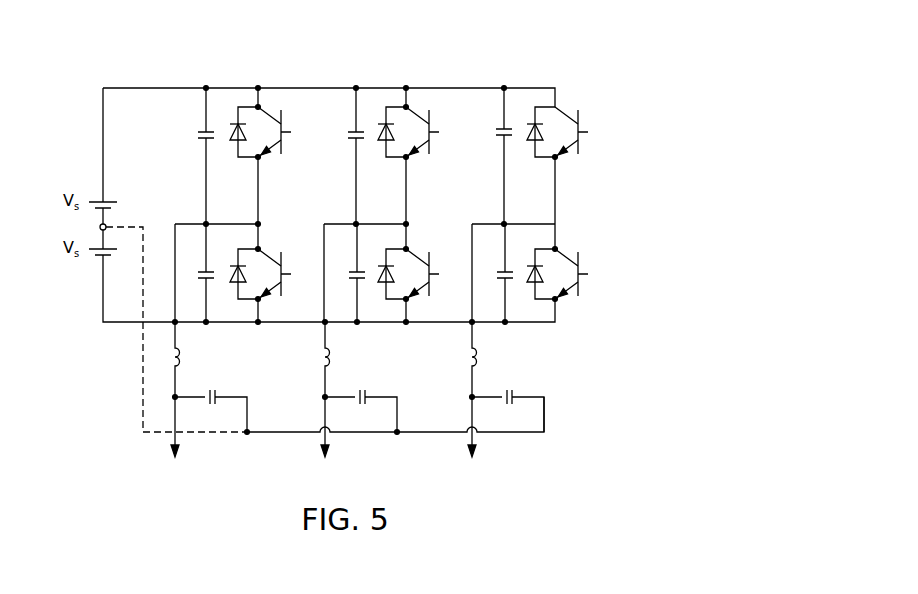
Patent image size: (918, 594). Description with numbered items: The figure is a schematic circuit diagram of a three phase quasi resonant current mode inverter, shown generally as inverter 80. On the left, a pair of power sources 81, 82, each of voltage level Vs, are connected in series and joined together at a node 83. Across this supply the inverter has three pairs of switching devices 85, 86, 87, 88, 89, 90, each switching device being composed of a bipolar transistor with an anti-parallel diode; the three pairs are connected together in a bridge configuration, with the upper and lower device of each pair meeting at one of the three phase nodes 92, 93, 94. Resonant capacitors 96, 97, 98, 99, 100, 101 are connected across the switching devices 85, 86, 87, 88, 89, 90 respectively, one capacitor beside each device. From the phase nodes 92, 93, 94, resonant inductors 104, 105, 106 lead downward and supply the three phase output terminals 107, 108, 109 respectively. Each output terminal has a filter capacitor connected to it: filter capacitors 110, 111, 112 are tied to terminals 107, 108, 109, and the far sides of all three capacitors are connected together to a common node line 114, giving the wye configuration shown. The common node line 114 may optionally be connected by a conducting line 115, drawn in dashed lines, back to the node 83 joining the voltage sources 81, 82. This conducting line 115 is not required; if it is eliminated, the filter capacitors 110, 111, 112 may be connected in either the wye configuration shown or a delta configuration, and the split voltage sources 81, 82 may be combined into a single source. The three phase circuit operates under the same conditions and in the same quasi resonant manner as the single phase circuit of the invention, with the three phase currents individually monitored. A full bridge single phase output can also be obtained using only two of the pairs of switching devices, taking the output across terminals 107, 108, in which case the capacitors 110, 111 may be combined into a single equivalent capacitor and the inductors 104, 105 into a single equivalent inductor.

The three phase quasi resonant current mode inverter 80 is at (315, 82).
The power source 81 is at (100, 198).
The power source 82 is at (97, 252).
The node 83 is at (100, 226).
The switching device 85 is at (283, 150).
The switching device 86 is at (283, 288).
The switching device 87 is at (430, 121).
The switching device 88 is at (432, 262).
The switching device 89 is at (580, 115).
The switching device 90 is at (583, 263).
The node 92 is at (262, 224).
The node 93 is at (410, 224).
The node 94 is at (555, 222).
The resonant capacitor 96 is at (203, 130).
The resonant capacitor 97 is at (204, 270).
The resonant capacitor 98 is at (354, 128).
The resonant capacitor 99 is at (357, 266).
The resonant capacitor 100 is at (496, 124).
The resonant capacitor 101 is at (508, 266).
The resonant inductor 104 is at (180, 365).
The resonant inductor 105 is at (330, 362).
The resonant inductor 106 is at (478, 360).
The output terminal 107 is at (180, 458).
The output terminal 108 is at (322, 455).
The output terminal 109 is at (480, 450).
The filter capacitor 110 is at (213, 395).
The filter capacitor 111 is at (365, 395).
The filter capacitor 112 is at (515, 395).
The common node line 114 is at (438, 434).
The conducting line 115 is at (143, 409).